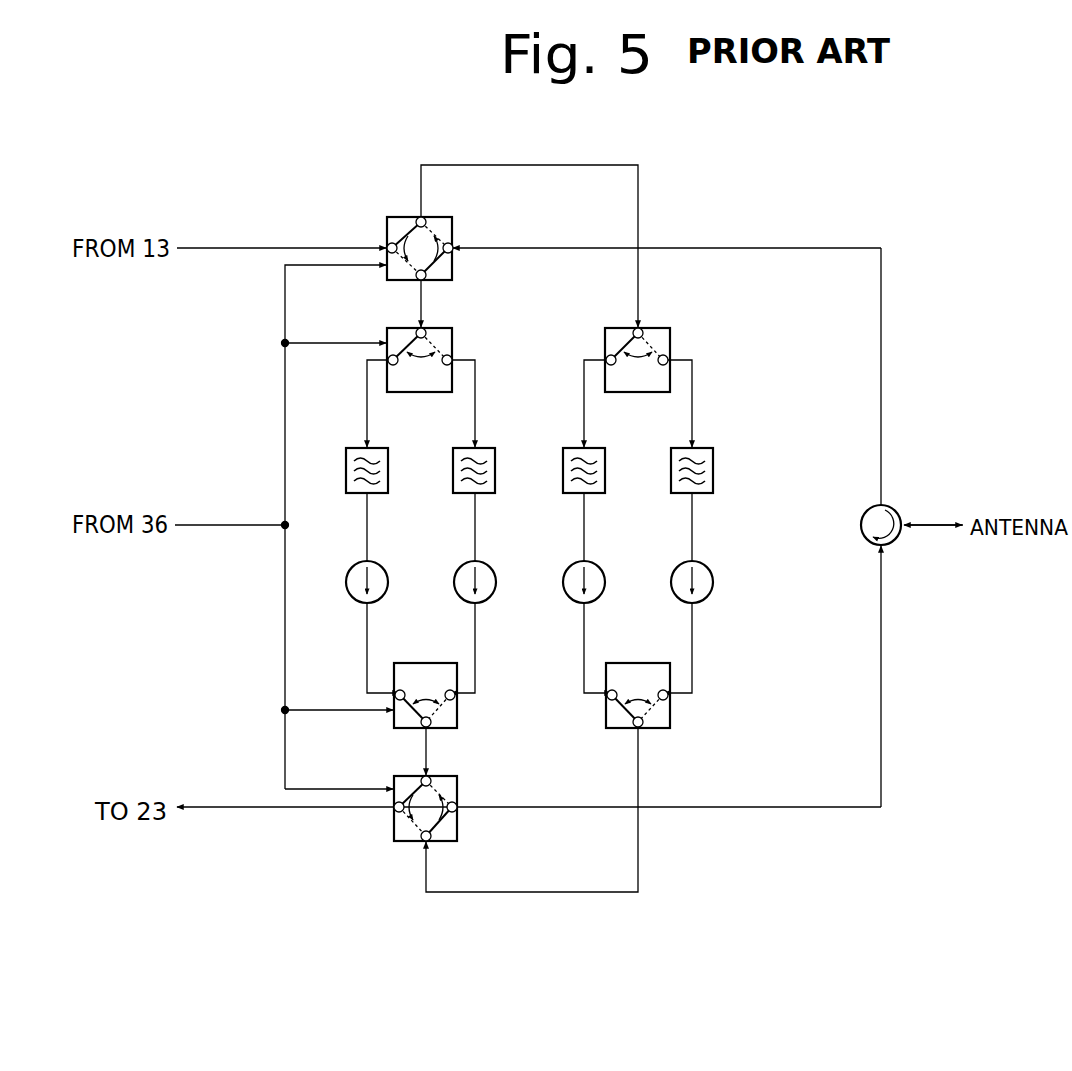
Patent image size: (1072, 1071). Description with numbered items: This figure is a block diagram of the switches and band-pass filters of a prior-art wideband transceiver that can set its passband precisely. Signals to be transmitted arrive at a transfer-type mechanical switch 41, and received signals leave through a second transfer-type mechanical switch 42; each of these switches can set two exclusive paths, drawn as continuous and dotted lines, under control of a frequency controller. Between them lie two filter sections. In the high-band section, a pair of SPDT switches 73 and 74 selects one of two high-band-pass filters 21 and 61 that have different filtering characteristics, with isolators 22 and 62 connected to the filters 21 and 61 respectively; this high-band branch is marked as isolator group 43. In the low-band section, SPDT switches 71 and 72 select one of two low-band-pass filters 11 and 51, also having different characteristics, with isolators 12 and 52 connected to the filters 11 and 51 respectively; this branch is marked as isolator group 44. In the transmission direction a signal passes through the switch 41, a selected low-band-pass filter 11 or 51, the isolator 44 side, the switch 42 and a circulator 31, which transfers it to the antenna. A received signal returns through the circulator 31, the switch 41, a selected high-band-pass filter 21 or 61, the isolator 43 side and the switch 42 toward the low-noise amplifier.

The switch 41 is at (452, 232).
The switch 42 is at (457, 793).
The switch 73 is at (452, 345).
The switch 71 is at (670, 335).
The switch 74 is at (457, 717).
The switch 72 is at (670, 716).
The high-band-pass filter 21 is at (388, 452).
The high-band-pass filter 61 is at (495, 452).
The low-band-pass filter 11 is at (605, 452).
The low-band-pass filter 51 is at (713, 455).
The isolator 22 is at (382, 567).
The isolator 62 is at (490, 567).
The isolator 12 is at (599, 567).
The isolator 52 is at (707, 567).
The isolator 43 is at (420, 570).
The isolator 44 is at (636, 570).
The circulator 31 is at (895, 512).